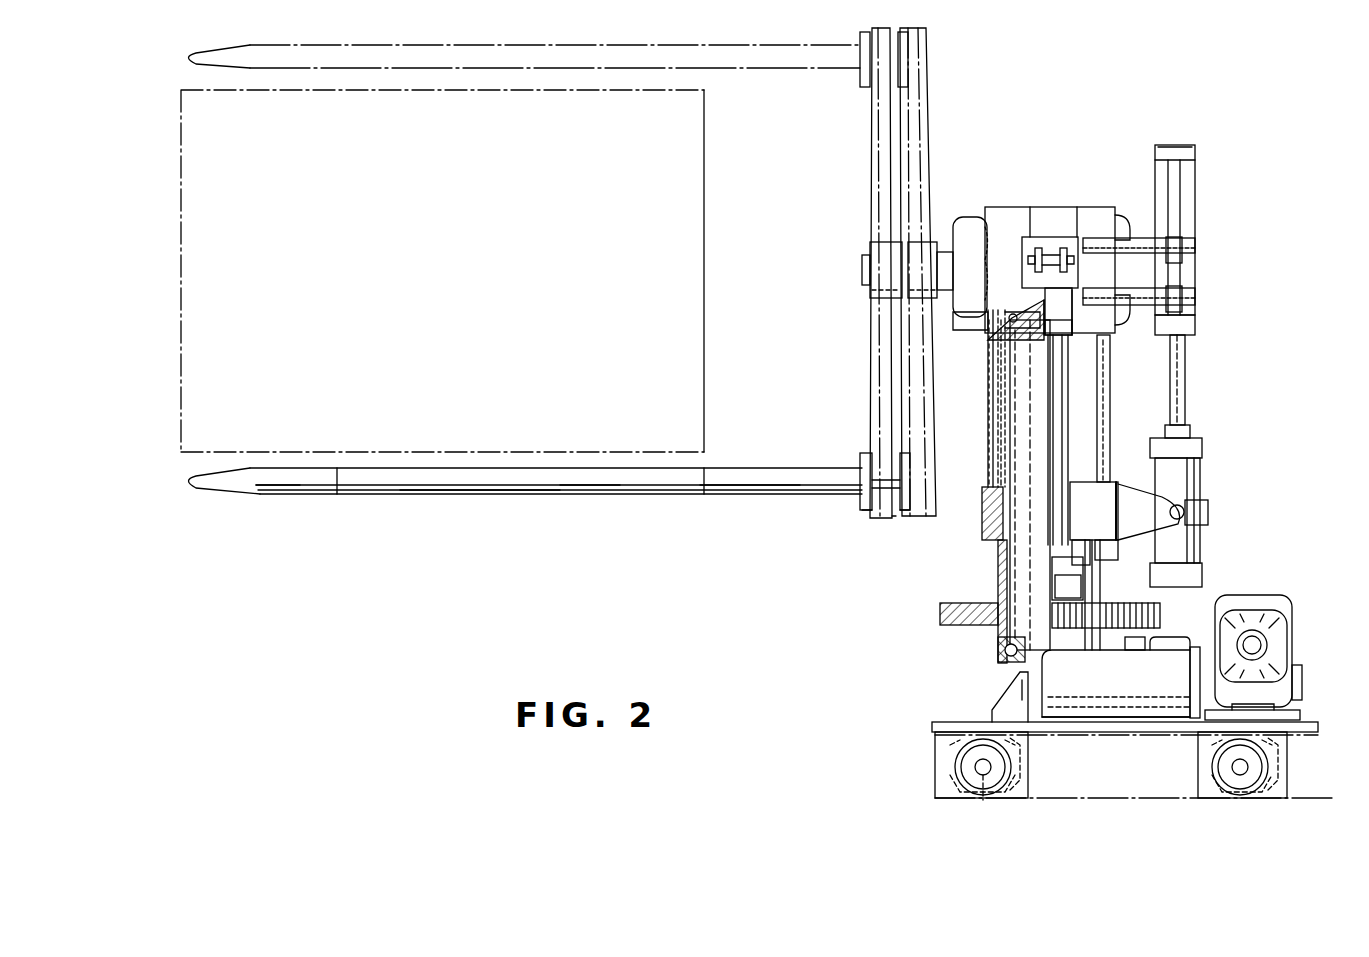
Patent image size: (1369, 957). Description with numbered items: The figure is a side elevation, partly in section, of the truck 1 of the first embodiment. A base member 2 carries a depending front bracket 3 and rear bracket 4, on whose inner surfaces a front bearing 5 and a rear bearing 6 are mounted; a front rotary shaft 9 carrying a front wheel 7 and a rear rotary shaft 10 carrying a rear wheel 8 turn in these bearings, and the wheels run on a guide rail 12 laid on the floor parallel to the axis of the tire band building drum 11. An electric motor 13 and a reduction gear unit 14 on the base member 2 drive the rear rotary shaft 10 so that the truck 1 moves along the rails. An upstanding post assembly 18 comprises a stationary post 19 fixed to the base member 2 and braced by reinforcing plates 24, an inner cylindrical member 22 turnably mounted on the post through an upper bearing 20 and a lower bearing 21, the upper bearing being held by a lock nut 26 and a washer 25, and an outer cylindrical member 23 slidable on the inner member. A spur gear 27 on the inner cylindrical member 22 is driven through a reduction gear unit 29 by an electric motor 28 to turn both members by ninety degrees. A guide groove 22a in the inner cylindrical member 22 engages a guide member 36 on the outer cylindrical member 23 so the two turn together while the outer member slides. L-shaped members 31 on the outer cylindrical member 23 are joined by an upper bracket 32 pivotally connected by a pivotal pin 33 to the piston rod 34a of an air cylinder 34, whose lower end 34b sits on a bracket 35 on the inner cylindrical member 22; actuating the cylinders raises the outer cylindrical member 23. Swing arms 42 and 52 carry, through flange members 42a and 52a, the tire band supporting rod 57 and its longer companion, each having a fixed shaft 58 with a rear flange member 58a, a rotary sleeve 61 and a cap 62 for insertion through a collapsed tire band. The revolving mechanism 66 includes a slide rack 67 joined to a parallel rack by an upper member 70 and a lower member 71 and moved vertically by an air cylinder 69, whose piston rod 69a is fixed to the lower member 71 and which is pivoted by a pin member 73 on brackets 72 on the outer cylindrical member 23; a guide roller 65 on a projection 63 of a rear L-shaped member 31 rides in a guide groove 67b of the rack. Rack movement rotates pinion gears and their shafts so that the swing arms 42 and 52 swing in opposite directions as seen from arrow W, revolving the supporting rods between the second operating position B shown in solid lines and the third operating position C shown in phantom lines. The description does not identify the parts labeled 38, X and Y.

The truck 1 is at (952, 716).
The base member 2 is at (1072, 730).
The front bracket 3 is at (945, 787).
The rear bracket 4 is at (1200, 785).
The front bearing 5 is at (1022, 785).
The rear bearing 6 is at (1280, 755).
The front wheel 7 is at (975, 787).
The rear wheel 8 is at (1243, 790).
The front rotary shaft 9 is at (983, 800).
The rear rotary shaft 10 is at (1235, 775).
The tire band building drum 11 is at (190, 373).
The guide rail 12 is at (1072, 798).
The electric motor 13 is at (1130, 717).
The reduction gear unit 14 is at (1254, 597).
The upstanding post assembly 18 is at (985, 420).
The stationary post 19 is at (1032, 585).
The upper bearing 20 is at (1010, 316).
The lower bearing 21 is at (1004, 650).
The inner cylindrical member 22 is at (997, 585).
The guide groove 22a is at (1000, 456).
The outer cylindrical member 23 is at (987, 440).
The reinforcing plate 24 is at (1000, 708).
The washer 25 is at (1010, 325).
The lock nut 26 is at (1020, 330).
The spur gear 27 is at (1130, 604).
The electric motor 28 is at (1185, 647).
The reduction gear unit 29 is at (1125, 650).
The L-shaped member 31 is at (1075, 215).
The upper bracket 32 is at (1030, 240).
The pivotal pin 33 is at (1034, 262).
The air cylinder 34 is at (1065, 422).
The piston rod 34a is at (1060, 300).
The nut block 34b is at (1080, 540).
The bracket 35 is at (1090, 578).
The guide member 36 is at (982, 510).
The housing 38 is at (958, 240).
The swing arm 42 is at (940, 300).
The flange member 42a is at (906, 512).
The swing arm 52 is at (890, 250).
The flange member 52a is at (868, 512).
The tire band supporting rod 57 is at (497, 497).
The fixed shaft 58 is at (745, 490).
The flange member 58a is at (860, 462).
The rotary sleeve 61 is at (580, 490).
The cap 62 is at (290, 490).
The projection 63 is at (1128, 242).
The guide roller 65 is at (1182, 297).
The tire band supporting rods revolving mechanism 66 is at (1203, 243).
The slide rack 67 is at (1190, 300).
The guide groove 67b is at (1180, 205).
The air cylinder 69 is at (1202, 475).
The piston rod 69a is at (1186, 378).
The upper member 70 is at (1178, 152).
The lower member 71 is at (1190, 325).
The bracket 72 is at (1140, 492).
The pin member 73 is at (1182, 506).
The second operating position B is at (664, 498).
The third operating position C is at (950, 95).
The arrow W is at (150, 272).
The section X is at (1340, 170).
The section Y is at (1150, 165).